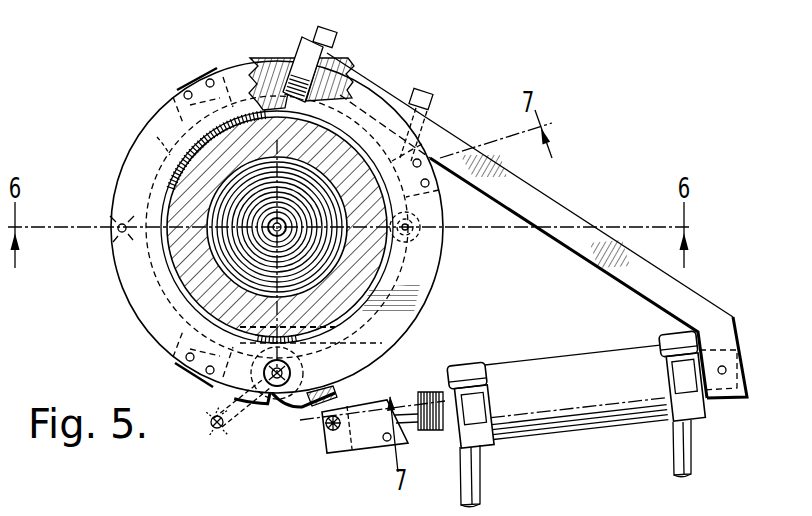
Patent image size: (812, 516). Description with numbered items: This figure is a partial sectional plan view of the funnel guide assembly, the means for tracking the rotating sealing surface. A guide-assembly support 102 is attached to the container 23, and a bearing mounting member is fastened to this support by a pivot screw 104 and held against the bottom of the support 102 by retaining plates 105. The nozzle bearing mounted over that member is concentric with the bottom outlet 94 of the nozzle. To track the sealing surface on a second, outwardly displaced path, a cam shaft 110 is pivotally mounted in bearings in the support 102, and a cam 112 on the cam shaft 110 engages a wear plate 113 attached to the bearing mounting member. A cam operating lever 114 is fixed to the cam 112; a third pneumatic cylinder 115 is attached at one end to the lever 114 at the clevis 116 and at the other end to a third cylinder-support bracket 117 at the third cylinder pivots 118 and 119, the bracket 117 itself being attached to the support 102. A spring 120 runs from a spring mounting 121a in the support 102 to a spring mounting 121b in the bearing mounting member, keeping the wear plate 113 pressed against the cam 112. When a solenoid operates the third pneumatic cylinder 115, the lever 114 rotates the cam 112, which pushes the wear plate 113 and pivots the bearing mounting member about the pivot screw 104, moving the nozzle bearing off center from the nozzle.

The container 23 is at (193, 272).
The bottom outlet 94 is at (284, 235).
The guide-assembly support 102 is at (425, 283).
The pivot screw 104 is at (444, 248).
The retaining plates 105 is at (187, 80).
The cam shaft 110 is at (300, 370).
The cam 112 is at (267, 433).
The wear plate 113 is at (386, 340).
The cam operating lever 114 is at (309, 425).
The third pneumatic cylinder 115 is at (552, 412).
The clevis 116 is at (367, 447).
The third cylinder-support bracket 117 is at (558, 205).
The third cylinder pivot 118 is at (333, 431).
The third cylinder pivot 119 is at (727, 368).
The spring 120 is at (157, 137).
The spring mounting 121a is at (172, 98).
The spring mounting 121b is at (115, 230).